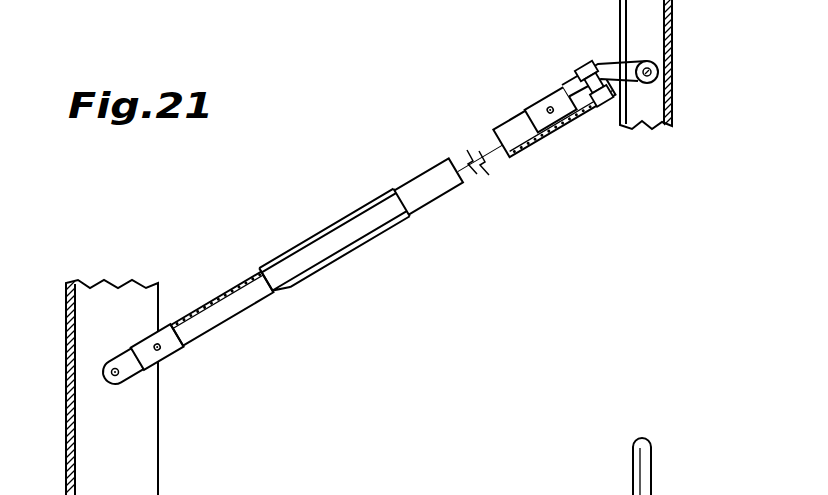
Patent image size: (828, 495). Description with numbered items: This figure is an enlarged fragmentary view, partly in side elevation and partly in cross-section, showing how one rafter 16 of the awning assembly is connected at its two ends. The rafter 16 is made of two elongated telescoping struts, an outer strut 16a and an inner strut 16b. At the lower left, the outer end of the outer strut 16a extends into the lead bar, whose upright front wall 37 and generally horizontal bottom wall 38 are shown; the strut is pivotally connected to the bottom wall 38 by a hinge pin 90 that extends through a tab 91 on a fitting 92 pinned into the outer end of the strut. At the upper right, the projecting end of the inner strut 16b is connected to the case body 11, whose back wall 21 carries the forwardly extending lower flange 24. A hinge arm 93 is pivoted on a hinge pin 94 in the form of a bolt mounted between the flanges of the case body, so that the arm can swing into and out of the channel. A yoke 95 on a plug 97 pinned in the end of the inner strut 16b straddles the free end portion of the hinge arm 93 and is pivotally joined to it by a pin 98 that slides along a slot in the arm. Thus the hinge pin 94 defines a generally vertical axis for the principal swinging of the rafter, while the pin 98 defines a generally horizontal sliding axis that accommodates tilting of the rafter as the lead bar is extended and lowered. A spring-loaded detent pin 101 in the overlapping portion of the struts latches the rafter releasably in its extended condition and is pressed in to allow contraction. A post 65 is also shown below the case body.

The case body 11 is at (684, 87).
The rafter 16 is at (391, 166).
The outer strut 16a is at (217, 290).
The inner strut 16b is at (533, 148).
The back wall 21 is at (672, 106).
The lower flange 24 is at (645, 125).
The front wall 37 is at (66, 453).
The bottom wall 38 is at (146, 463).
The stop post 65 is at (633, 441).
The hinge pin 90 is at (111, 368).
The tab 91 is at (123, 386).
The fitting 92 is at (181, 349).
The hinge arm 93 is at (649, 60).
The hinge pin 94 is at (643, 62).
The yoke 95 is at (602, 112).
The plug 97 is at (552, 96).
The pin 98 is at (585, 63).
The detent pin 101 is at (403, 205).